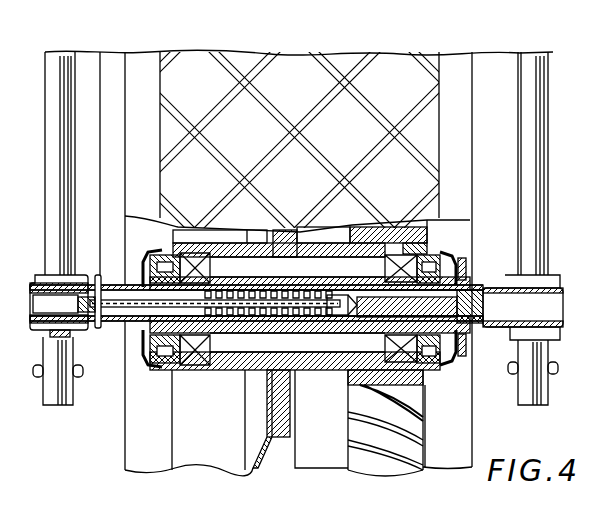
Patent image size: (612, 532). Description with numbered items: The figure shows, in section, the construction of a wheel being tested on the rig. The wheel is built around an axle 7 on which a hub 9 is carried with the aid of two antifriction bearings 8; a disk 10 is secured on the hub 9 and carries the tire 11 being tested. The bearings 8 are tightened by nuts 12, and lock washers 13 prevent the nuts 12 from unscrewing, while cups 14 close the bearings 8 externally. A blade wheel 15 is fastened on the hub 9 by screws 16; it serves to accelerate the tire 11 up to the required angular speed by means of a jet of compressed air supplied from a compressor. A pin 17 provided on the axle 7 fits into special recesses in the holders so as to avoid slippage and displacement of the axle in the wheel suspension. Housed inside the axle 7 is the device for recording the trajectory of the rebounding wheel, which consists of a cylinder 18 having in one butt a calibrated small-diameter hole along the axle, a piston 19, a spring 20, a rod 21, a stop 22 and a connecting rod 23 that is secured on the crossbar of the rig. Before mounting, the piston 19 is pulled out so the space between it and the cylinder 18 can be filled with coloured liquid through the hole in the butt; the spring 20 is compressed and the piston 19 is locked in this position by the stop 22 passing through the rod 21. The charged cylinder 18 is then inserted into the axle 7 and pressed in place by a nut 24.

The axle 7 is at (547, 325).
The antifriction bearings 8 is at (423, 377).
The hub 9 is at (343, 364).
The disk 10 is at (260, 454).
The tire 11 is at (390, 183).
The nuts 12 is at (460, 276).
The lock washers 13 is at (451, 263).
The cups 14 is at (458, 264).
The blade wheel 15 is at (416, 222).
The screws 16 is at (422, 246).
The pin 17 is at (73, 349).
The cylinder 18 is at (141, 276).
The piston 19 is at (331, 318).
The spring 20 is at (237, 320).
The rod 21 is at (143, 325).
The stop 22 is at (94, 274).
The connecting rod 23 is at (100, 122).
The nut 24 is at (33, 332).